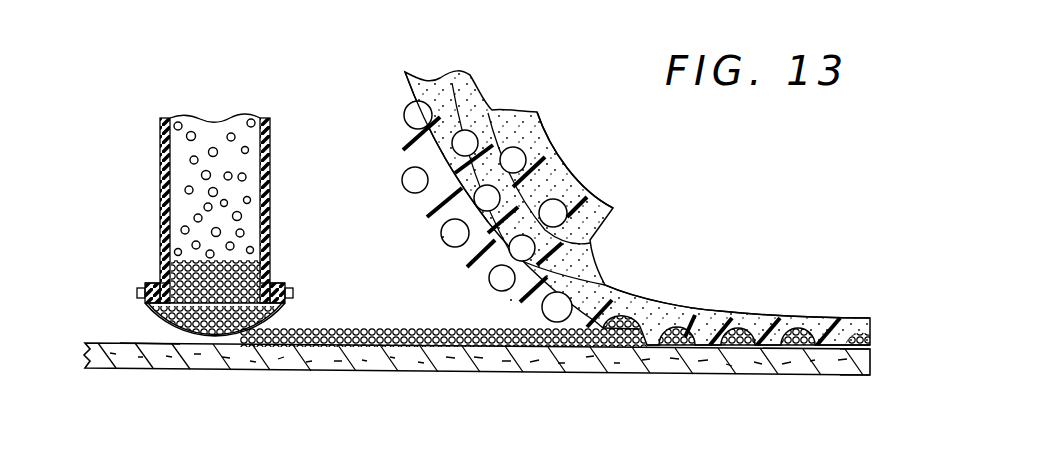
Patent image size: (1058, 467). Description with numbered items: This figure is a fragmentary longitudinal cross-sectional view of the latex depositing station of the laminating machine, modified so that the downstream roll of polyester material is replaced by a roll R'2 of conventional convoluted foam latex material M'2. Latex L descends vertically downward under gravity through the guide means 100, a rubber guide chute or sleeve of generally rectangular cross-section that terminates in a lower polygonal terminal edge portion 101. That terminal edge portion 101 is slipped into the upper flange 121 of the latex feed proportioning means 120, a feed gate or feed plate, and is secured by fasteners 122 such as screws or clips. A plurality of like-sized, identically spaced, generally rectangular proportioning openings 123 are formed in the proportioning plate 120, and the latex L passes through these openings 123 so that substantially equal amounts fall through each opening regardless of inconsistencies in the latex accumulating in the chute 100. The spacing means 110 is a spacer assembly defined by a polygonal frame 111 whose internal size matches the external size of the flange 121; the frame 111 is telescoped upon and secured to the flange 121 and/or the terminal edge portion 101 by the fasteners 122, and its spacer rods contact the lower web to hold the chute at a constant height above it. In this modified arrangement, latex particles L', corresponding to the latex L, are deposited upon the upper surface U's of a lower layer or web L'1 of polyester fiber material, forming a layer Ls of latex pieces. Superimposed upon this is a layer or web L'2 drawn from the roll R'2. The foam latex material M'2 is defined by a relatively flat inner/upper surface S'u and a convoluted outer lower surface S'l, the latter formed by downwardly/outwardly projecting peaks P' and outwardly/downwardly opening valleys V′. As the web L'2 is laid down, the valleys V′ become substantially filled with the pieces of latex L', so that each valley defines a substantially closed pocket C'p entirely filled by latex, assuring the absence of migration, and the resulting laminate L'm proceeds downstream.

The guide means 100 is at (160, 120).
The latex L is at (279, 208).
The latex feed proportioning means 120 is at (158, 282).
The polygonal frame 111 is at (150, 292).
The fasteners 122 is at (137, 293).
The lower polygonal terminal edge portion 101 is at (268, 272).
The upper flange 121 is at (276, 286).
The spacing means 110 is at (290, 284).
The proportioning openings 123 is at (250, 340).
The upper surface U's is at (129, 382).
The lower layer or web L'1 is at (477, 386).
The layer of particulate material Ls is at (196, 350).
The convoluted outer lower surface S'l is at (409, 147).
The valleys V′ is at (442, 238).
The peaks P' is at (477, 291).
The roll R'2 is at (592, 160).
The inner/upper surface S'u is at (645, 361).
The convoluted foam latex material M'2 is at (587, 292).
The layer or web L'2 is at (636, 208).
The latex particles L' is at (682, 406).
The closed pocket C'p is at (817, 402).
The laminate L'm is at (732, 421).